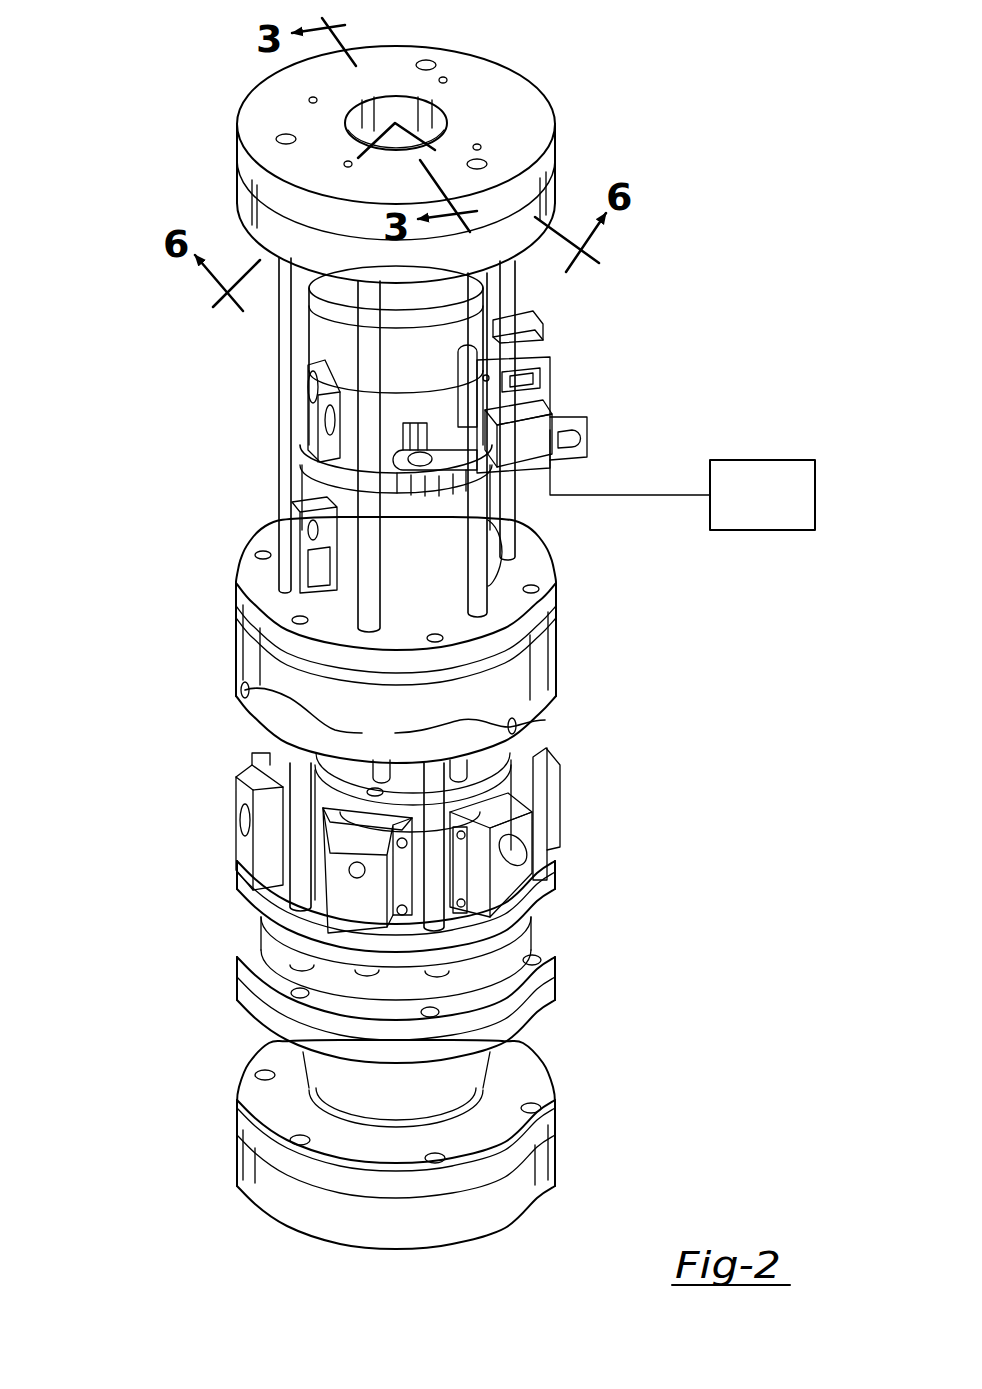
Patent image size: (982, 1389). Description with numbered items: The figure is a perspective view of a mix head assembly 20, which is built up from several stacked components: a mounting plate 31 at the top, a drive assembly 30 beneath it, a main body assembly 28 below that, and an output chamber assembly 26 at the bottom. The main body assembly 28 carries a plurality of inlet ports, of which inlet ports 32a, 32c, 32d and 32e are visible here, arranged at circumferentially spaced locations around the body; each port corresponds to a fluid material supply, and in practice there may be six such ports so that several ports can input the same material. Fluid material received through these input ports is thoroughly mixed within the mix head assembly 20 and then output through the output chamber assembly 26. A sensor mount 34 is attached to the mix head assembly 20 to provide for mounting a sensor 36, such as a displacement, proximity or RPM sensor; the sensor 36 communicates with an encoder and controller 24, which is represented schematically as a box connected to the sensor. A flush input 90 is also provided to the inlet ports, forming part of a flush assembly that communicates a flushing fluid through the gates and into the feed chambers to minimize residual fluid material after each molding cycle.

The mix head assembly 20 is at (162, 560).
The encoder and controller 24 is at (781, 509).
The output chamber assembly 26 is at (216, 1111).
The main body assembly 28 is at (214, 788).
The drive assembly 30 is at (328, 346).
The mounting plate 31 is at (507, 78).
The inlet port 32a is at (513, 892).
The inlet port 32c is at (243, 853).
The inlet port 32d is at (550, 797).
The inlet port 32e is at (348, 917).
The sensor mount 34 is at (540, 388).
The sensor 36 is at (318, 412).
The flush input 90 is at (396, 640).